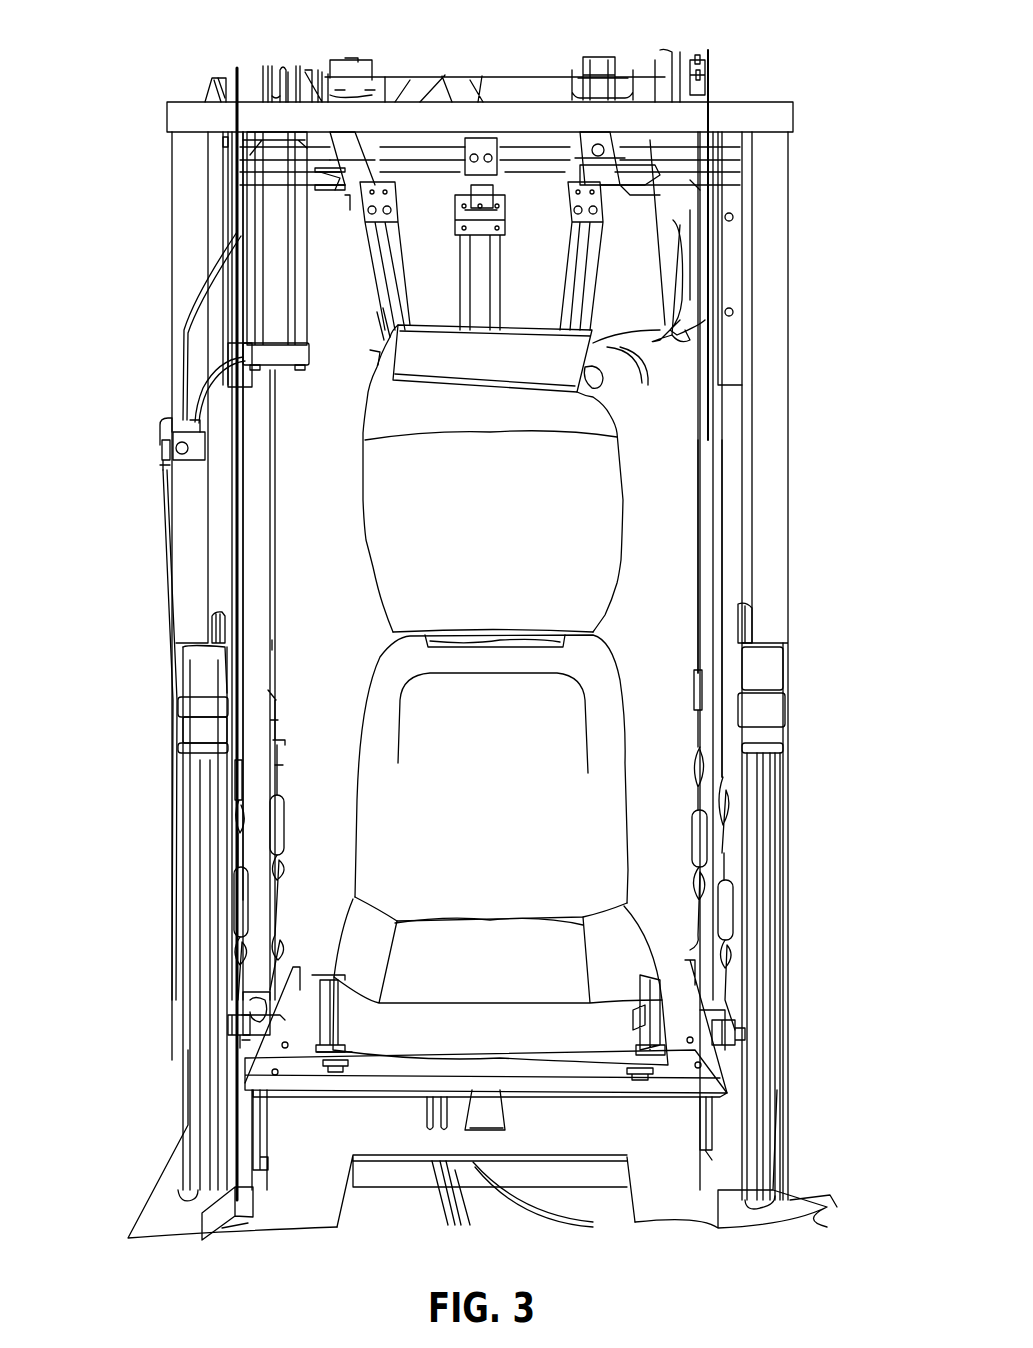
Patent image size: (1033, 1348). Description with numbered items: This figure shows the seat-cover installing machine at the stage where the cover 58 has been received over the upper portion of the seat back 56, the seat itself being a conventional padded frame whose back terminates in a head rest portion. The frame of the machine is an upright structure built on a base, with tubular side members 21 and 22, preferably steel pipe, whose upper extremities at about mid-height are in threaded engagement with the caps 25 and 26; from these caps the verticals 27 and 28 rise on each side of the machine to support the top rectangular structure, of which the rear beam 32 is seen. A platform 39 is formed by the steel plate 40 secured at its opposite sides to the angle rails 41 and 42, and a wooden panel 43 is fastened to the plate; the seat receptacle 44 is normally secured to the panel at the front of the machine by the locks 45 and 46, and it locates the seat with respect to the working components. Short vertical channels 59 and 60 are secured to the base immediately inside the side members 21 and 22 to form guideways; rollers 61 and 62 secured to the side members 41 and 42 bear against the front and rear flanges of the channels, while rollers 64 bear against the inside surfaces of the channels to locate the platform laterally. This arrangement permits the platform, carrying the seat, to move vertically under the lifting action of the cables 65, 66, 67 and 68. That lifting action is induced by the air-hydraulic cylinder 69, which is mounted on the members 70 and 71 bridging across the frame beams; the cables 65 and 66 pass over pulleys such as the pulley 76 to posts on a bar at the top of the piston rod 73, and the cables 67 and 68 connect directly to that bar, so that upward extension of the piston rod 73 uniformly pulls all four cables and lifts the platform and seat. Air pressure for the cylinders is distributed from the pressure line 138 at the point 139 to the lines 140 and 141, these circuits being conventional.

The tubular side member 21 is at (768, 795).
The tubular side member 22 is at (195, 815).
The cap 25 is at (742, 623).
The cap 26 is at (226, 634).
The vertical 27 is at (785, 378).
The vertical 28 is at (180, 572).
The rear beam 32 is at (200, 102).
The platform 39 is at (392, 1102).
The steel plate 40 is at (557, 1090).
The angle rail 41 is at (710, 1120).
The angle rail 42 is at (268, 1122).
The wooden panel 43 is at (597, 1092).
The seat receptacle 44 is at (328, 967).
The lock 45 is at (638, 1080).
The lock 46 is at (334, 1072).
The back 56 is at (370, 698).
The cover 58 is at (613, 580).
The vertical channel 59 is at (718, 1180).
The vertical channel 60 is at (253, 1181).
The roller 61 is at (740, 1025).
The roller 62 is at (236, 1018).
The roller 64 is at (258, 992).
The cable 65 is at (721, 474).
The cable 66 is at (697, 521).
The cable 67 is at (277, 488).
The cable 68 is at (244, 540).
The air-hydraulic cylinder 69 is at (290, 256).
The member 70 is at (226, 82).
The member 71 is at (314, 76).
The piston rod 73 is at (278, 66).
The pulley 76 is at (714, 61).
The pressure line 138 is at (165, 500).
The distribution point 139 is at (205, 443).
The line 140 is at (184, 328).
The line 141 is at (197, 392).